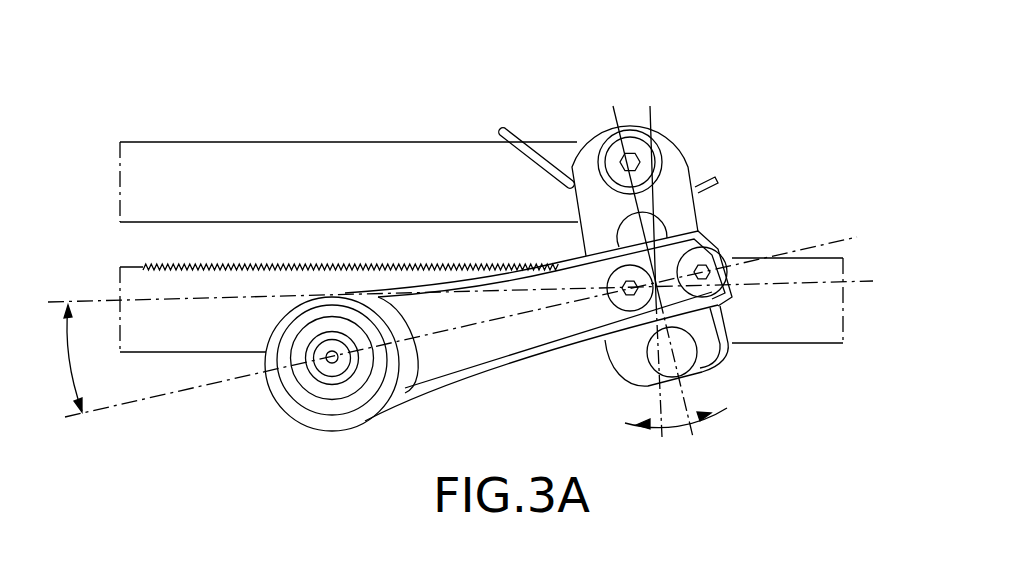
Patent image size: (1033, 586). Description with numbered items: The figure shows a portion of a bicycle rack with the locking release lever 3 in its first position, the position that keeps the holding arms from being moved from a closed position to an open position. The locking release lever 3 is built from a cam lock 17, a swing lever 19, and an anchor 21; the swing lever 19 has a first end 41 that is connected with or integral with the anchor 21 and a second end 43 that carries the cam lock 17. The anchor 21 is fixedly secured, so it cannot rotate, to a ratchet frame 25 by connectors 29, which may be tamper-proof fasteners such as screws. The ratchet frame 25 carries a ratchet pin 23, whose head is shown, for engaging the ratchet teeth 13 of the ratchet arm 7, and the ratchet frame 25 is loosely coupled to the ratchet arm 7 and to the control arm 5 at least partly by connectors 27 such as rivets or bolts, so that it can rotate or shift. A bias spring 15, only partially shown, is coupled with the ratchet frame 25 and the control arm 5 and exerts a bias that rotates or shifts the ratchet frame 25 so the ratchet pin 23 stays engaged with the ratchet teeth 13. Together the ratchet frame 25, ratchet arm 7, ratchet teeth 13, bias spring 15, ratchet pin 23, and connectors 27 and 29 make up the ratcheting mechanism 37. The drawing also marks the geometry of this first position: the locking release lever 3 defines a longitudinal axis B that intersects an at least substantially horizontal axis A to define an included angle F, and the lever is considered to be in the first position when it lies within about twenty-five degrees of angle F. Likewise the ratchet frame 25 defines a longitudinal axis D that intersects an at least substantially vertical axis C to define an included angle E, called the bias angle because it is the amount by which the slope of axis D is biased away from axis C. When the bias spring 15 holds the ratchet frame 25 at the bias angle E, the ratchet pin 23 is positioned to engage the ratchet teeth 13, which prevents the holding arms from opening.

The locking release lever 3 is at (330, 450).
The control arm 5 is at (155, 153).
The ratchet arm 7 is at (148, 338).
The ratchet teeth 13 is at (310, 263).
The bias spring 15 is at (530, 153).
The cam lock 17 is at (327, 392).
The swing lever 19 is at (507, 341).
The anchor 21 is at (687, 306).
The ratchet pin 23 is at (652, 226).
The ratchet frame 25 is at (637, 128).
The connectors 27 is at (646, 167).
The connectors 29 is at (716, 256).
The ratcheting mechanism 37 is at (773, 148).
The first end 41 is at (597, 318).
The second end 43 is at (436, 378).
The horizontal axis A is at (460, 287).
The longitudinal axis B is at (461, 343).
The vertical axis C is at (652, 283).
The longitudinal axis D is at (666, 280).
The bias angle E is at (673, 427).
The included angle F is at (70, 356).